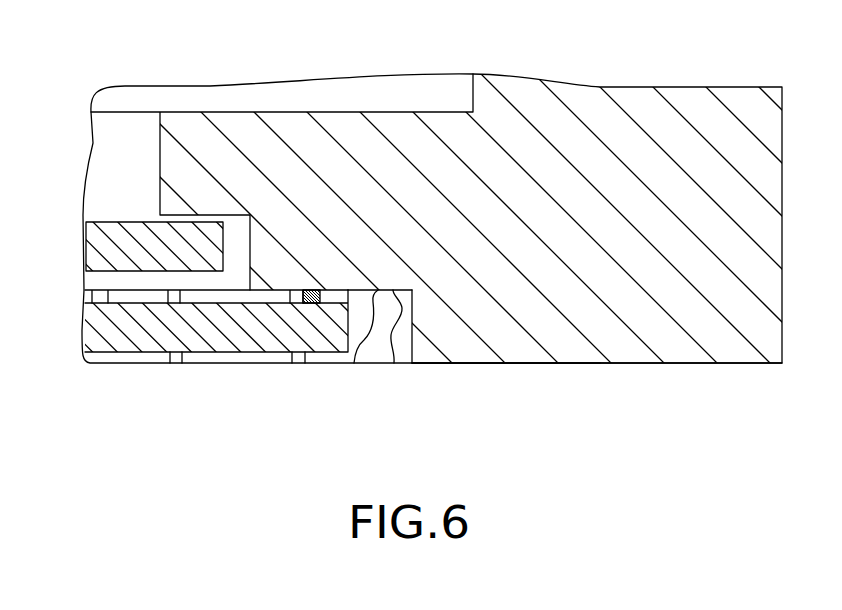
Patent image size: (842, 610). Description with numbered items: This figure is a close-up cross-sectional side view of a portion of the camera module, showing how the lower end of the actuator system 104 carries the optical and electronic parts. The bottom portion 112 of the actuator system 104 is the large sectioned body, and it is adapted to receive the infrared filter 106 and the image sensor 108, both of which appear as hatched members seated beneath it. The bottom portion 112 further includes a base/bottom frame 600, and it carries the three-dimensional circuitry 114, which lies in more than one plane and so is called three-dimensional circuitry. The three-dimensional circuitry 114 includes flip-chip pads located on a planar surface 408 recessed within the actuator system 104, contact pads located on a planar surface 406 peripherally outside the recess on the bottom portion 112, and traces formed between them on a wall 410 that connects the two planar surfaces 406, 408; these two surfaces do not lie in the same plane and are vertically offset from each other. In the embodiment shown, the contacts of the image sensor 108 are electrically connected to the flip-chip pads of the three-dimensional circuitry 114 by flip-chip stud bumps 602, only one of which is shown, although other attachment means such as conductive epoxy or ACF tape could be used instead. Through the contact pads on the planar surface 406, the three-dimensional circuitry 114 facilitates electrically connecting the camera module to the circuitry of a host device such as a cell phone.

The actuator system 104 is at (692, 273).
The infrared (IR) filter 106 is at (138, 222).
The image sensor 108 is at (126, 356).
The bottom portion 112 is at (483, 457).
The 3D circuitry 114 is at (344, 292).
The planar surface 406 is at (595, 363).
The planar surface 408 is at (354, 363).
The wall 410 is at (394, 363).
The base/bottom frame 600 is at (392, 290).
The flip-chip stud bumps 602 is at (298, 296).